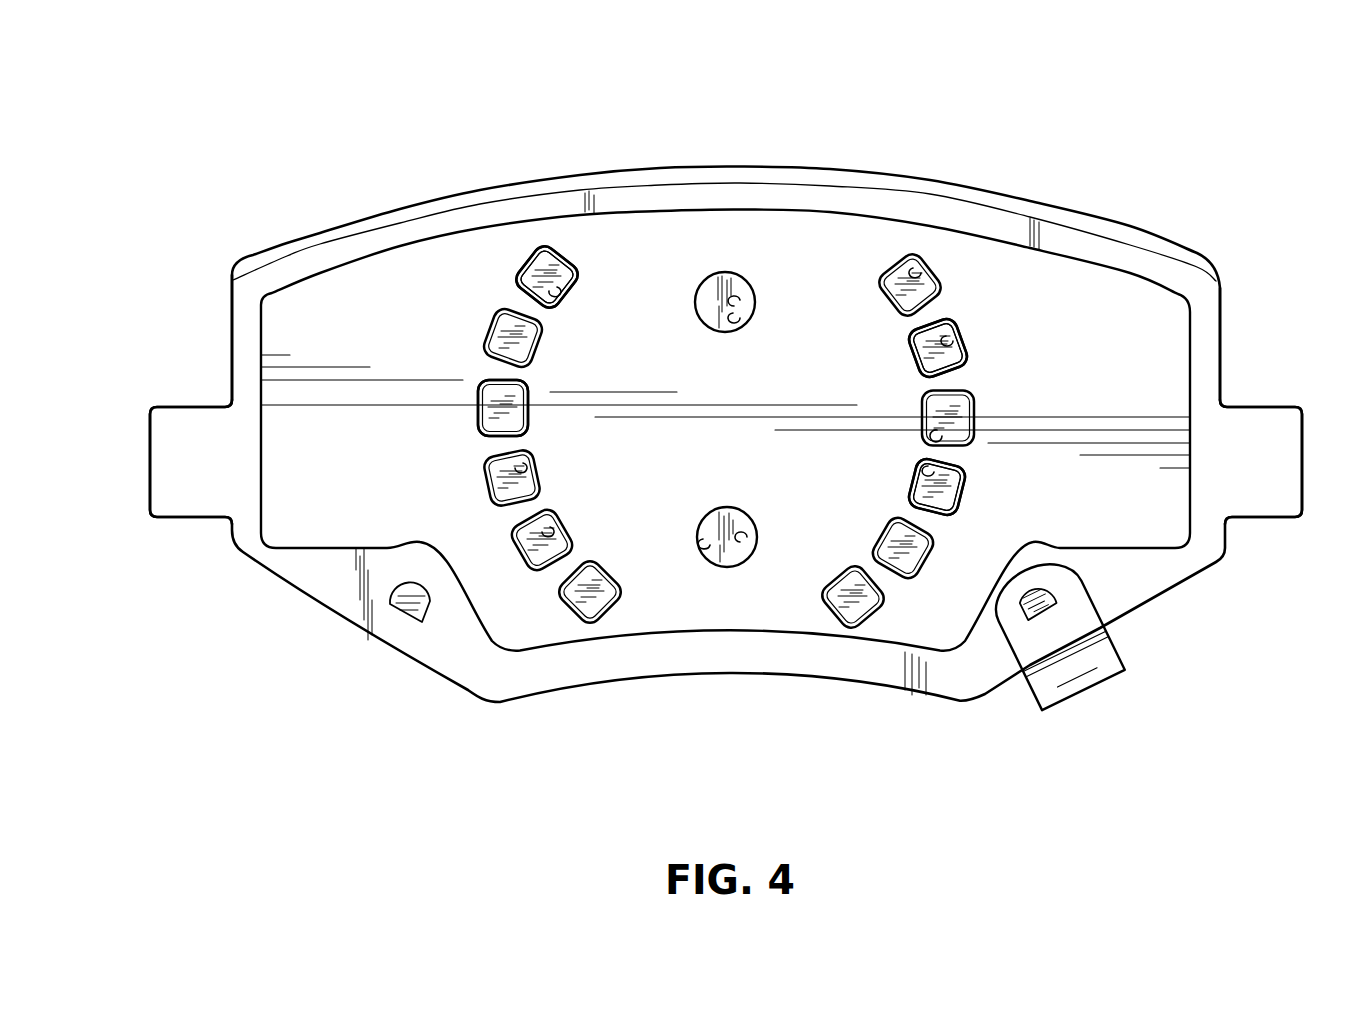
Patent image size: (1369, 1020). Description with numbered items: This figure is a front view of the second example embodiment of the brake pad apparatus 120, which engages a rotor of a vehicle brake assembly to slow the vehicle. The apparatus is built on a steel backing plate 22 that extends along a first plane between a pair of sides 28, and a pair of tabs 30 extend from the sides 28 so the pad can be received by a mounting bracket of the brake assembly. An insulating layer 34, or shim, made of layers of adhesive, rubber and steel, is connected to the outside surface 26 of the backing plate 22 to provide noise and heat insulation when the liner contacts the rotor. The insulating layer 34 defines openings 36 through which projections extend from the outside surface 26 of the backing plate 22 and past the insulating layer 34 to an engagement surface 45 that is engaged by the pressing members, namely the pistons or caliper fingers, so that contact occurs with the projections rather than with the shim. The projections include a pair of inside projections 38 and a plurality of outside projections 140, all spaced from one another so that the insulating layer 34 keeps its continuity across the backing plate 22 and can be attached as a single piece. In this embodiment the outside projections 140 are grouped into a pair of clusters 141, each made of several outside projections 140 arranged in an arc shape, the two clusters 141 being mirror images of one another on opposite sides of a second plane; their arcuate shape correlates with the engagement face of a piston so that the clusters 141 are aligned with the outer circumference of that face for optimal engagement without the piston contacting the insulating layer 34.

The brake pad apparatus 120 is at (1045, 143).
The backing plate 22 is at (587, 190).
The outside surface 26 is at (338, 253).
The sides 28 is at (230, 320).
The tabs 30 is at (163, 458).
The insulating layer 34 is at (317, 520).
The opening 36 is at (915, 272).
The inside projections 38 is at (740, 300).
The engagement surface 45 is at (550, 527).
The outside projections 140 is at (557, 287).
The clusters 141 is at (464, 422).